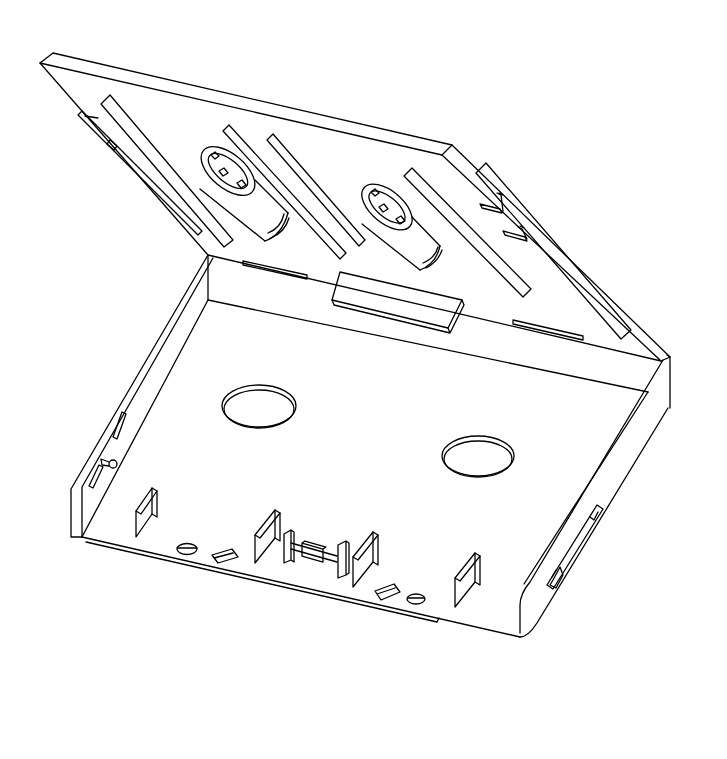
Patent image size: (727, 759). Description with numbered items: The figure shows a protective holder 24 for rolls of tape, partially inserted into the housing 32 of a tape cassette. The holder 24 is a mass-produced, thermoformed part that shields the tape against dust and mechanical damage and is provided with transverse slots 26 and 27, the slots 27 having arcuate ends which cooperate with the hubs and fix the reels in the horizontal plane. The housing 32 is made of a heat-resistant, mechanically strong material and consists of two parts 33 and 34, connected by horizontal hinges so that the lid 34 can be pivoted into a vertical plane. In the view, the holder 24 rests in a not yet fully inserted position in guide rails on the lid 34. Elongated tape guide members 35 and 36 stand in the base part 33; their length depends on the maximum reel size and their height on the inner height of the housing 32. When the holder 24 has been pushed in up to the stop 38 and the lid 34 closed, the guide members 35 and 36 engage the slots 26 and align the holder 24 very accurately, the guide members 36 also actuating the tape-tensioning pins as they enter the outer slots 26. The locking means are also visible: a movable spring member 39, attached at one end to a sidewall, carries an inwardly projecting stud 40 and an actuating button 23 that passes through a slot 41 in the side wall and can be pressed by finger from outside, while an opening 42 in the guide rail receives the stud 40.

The actuating button 23 is at (572, 556).
The holder 24 is at (325, 120).
The slot 26 is at (233, 128).
The slot 27 is at (300, 237).
The housing 32 is at (603, 270).
The housing part 33 is at (630, 470).
The lid 34 is at (557, 230).
The tape guide member 35 is at (268, 552).
The tape guide member 36 is at (152, 520).
The stop 38 is at (382, 302).
The spring member 39 is at (107, 430).
The stud 40 is at (117, 465).
The slot 41 is at (596, 508).
The opening 42 is at (520, 232).